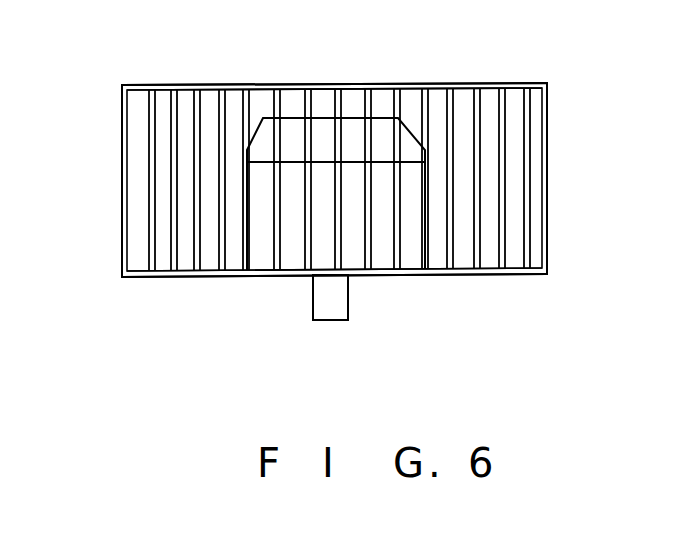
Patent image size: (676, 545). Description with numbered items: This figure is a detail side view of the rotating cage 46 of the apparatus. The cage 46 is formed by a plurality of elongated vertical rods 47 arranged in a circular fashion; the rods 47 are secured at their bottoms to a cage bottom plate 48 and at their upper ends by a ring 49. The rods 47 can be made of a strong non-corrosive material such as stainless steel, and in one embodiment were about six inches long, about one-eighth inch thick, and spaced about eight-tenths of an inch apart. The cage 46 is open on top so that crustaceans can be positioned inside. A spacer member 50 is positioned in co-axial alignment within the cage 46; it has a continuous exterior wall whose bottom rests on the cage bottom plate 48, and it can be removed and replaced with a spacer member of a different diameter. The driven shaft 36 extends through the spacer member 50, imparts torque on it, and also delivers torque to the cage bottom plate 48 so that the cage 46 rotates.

The rotating cage 46 is at (122, 203).
The elongated vertical rods 47 is at (210, 115).
The cage bottom plate 48 is at (165, 276).
The ring 49 is at (445, 81).
The spacer member 50 is at (325, 132).
The driven shaft 36 is at (317, 295).